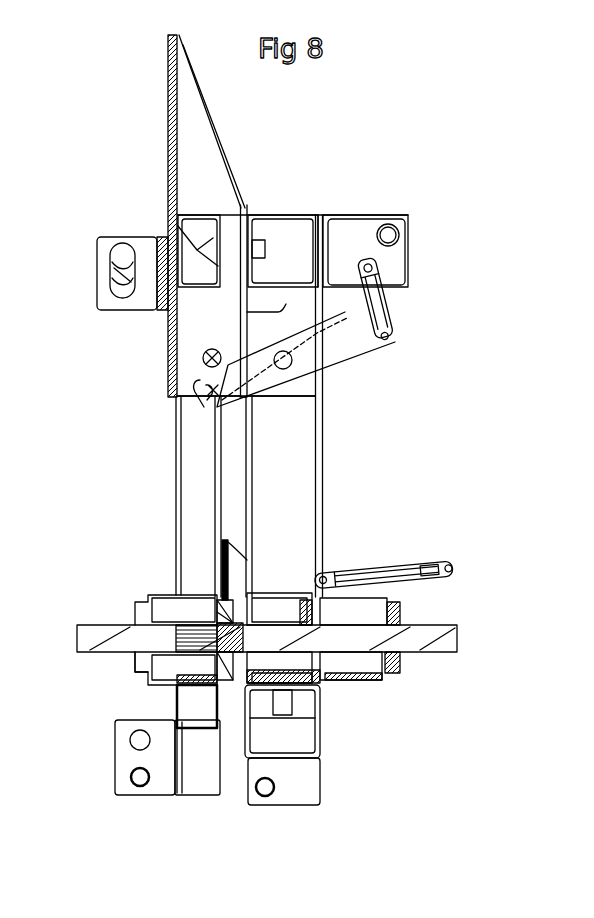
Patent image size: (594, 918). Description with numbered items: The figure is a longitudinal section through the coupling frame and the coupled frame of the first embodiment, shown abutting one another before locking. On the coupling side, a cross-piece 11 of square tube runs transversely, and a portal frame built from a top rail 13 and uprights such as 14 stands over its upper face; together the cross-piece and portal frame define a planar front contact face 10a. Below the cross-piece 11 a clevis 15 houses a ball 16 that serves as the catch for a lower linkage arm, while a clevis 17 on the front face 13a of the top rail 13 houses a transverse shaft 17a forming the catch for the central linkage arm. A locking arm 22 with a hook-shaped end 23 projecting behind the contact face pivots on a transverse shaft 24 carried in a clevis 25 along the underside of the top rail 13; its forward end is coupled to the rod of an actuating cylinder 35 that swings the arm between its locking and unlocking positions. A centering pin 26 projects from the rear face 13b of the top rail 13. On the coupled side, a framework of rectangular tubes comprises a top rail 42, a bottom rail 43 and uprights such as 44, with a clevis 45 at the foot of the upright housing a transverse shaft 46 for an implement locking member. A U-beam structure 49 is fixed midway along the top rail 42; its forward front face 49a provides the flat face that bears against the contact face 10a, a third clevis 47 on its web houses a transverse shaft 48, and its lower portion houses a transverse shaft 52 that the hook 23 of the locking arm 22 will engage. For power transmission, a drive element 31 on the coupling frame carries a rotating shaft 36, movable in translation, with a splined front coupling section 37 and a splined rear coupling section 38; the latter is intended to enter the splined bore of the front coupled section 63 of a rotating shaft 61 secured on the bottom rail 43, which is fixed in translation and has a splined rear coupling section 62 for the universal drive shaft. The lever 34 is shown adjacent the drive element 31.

The U-beam structure 49 is at (160, 90).
The forward front face 49a is at (223, 296).
The centering pin 26 is at (170, 218).
The top rail 13 is at (283, 215).
The front face of the top rail 13a is at (307, 216).
The rear face of the top rail 13b is at (237, 178).
The clevis 17 is at (392, 263).
The transverse shaft 17a is at (395, 215).
The third clevis 47 is at (102, 303).
The transverse shaft 48 is at (112, 260).
The top rail 42 is at (170, 322).
The transverse shaft 52 is at (203, 358).
The upright 44 is at (187, 407).
The hook-shaped end 23 is at (203, 398).
The front contact face 10a is at (385, 345).
The transverse shaft 24 is at (287, 368).
The locking arm 22 is at (323, 357).
The clevis 25 is at (293, 398).
The upright 14 is at (292, 498).
The actuating cylinder 35 is at (372, 304).
The front coupled section 63 is at (187, 623).
The splined rear coupling section 62 is at (103, 625).
The rotating shaft 61 is at (124, 657).
The splined front coupling section 37 is at (443, 652).
The operating lever 34 is at (455, 573).
The rotating shaft 36 is at (415, 663).
The drive element 31 is at (363, 663).
The splined rear coupling section 38 is at (340, 712).
The bottom rail 43 is at (187, 698).
The cross-piece 11 is at (302, 740).
The clevis 15 is at (303, 787).
The ball 16 is at (253, 790).
The clevis 45 is at (160, 792).
The transverse shaft 46 is at (133, 775).